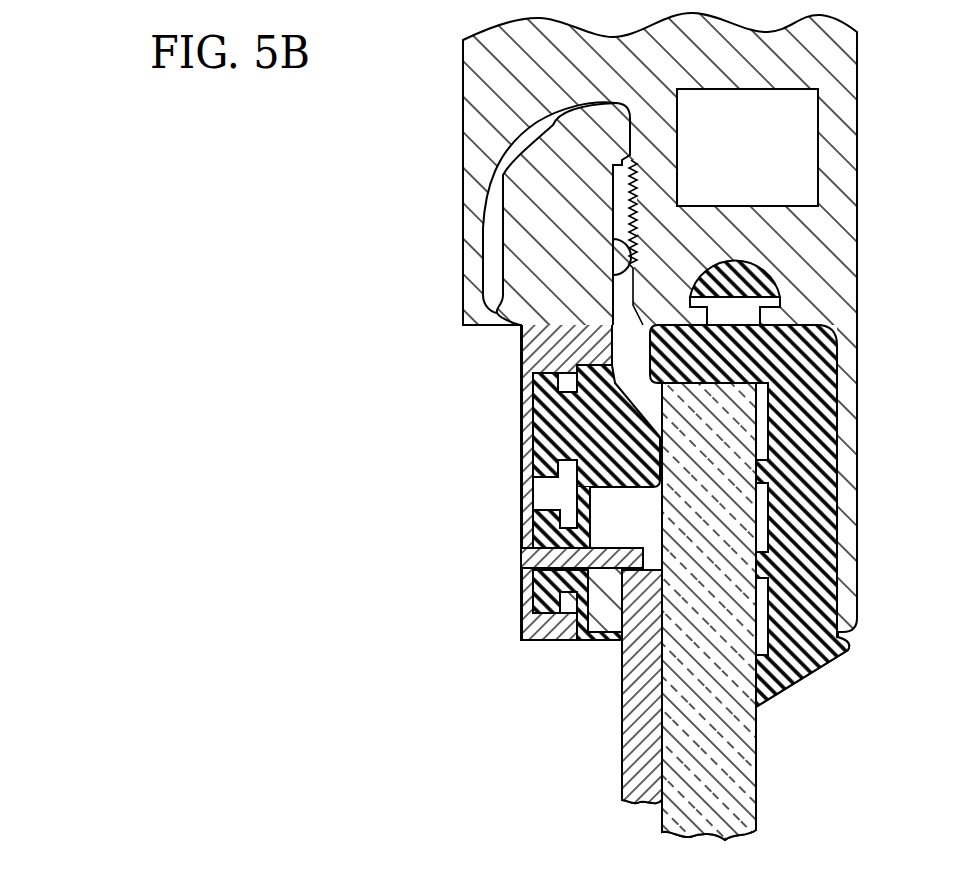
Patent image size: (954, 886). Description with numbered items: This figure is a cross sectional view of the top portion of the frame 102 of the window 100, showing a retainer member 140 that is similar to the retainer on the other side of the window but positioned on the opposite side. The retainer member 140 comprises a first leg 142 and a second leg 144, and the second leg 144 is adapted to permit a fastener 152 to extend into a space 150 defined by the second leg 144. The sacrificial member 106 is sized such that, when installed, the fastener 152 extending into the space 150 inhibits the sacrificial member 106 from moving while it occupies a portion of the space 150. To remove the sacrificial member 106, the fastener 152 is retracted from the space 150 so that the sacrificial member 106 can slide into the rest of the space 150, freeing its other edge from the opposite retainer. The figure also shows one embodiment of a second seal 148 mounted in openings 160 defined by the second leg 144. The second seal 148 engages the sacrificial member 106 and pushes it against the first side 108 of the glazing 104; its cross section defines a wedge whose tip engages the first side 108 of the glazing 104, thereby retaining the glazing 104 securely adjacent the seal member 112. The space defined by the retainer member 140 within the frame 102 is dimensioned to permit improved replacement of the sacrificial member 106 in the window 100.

The window 100 is at (318, 512).
The housing body 102 is at (858, 152).
The glazing 104 is at (737, 780).
The sacrificial member 106 is at (641, 742).
The first side 108 is at (662, 813).
The seal member 112 is at (790, 667).
The retainer member 140 is at (497, 338).
The first leg 142 is at (540, 167).
The second leg 144 is at (552, 617).
The second seal 148 is at (550, 430).
The space 150 is at (612, 516).
The fastener 152 is at (545, 560).
The openings 160 is at (550, 368).